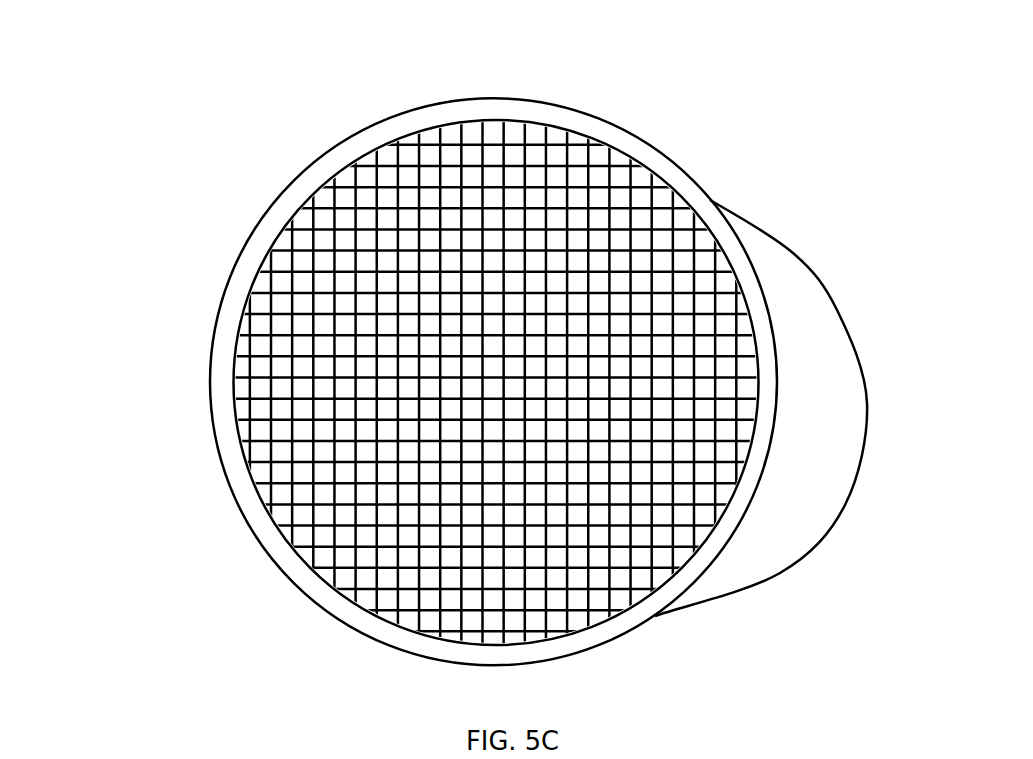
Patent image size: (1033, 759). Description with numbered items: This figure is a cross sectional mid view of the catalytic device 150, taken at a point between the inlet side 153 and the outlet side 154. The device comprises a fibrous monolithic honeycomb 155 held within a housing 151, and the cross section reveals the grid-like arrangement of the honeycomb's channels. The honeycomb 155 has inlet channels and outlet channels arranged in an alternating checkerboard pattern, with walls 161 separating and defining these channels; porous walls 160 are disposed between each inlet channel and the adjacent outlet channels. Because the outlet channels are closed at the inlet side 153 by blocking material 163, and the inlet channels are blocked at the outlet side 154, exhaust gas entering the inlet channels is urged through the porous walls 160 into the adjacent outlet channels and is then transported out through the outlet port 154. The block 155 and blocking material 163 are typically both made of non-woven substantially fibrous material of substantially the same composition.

The catalytic device 150 is at (800, 74).
The housing 151 is at (712, 199).
The inlet side 153 is at (264, 80).
The outlet side 154 is at (823, 204).
The fibrous monolithic honeycomb 155 is at (330, 255).
The porous walls 160 is at (300, 503).
The walls 161 is at (323, 347).
The blocking material 163 is at (323, 368).